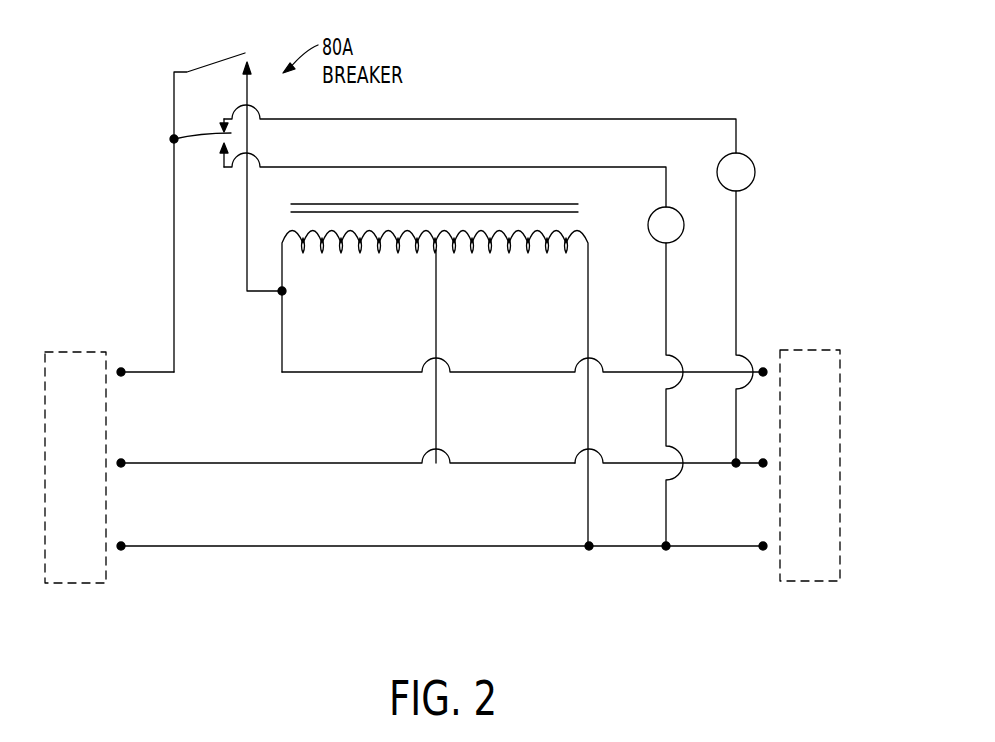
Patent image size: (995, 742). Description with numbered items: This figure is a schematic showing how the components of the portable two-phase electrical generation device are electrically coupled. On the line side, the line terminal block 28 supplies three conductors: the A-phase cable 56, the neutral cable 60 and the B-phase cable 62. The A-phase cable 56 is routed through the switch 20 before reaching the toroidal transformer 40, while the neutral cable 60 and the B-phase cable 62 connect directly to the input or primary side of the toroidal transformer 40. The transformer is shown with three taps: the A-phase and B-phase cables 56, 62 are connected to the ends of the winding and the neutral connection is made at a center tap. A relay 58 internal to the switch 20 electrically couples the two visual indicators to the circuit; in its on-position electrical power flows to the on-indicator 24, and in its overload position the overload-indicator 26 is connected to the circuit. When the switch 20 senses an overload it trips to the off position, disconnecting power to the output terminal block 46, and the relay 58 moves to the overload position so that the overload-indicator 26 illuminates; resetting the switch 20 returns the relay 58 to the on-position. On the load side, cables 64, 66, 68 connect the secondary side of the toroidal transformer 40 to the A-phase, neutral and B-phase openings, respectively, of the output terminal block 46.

The switch 20 is at (174, 96).
The relay 58 is at (185, 143).
The toroidal transformer 40 is at (464, 186).
The on-indicator 24 is at (652, 212).
The overload-indicator 26 is at (752, 158).
The A-phase cable 56 is at (147, 370).
The neutral cable 60 is at (213, 462).
The B-phase cable 62 is at (235, 547).
The A-phase output cable 64 is at (638, 367).
The neutral output cable 66 is at (638, 458).
The B-phase output cable 68 is at (638, 541).
The line terminal block 28 is at (79, 585).
The output terminal block 46 is at (812, 582).